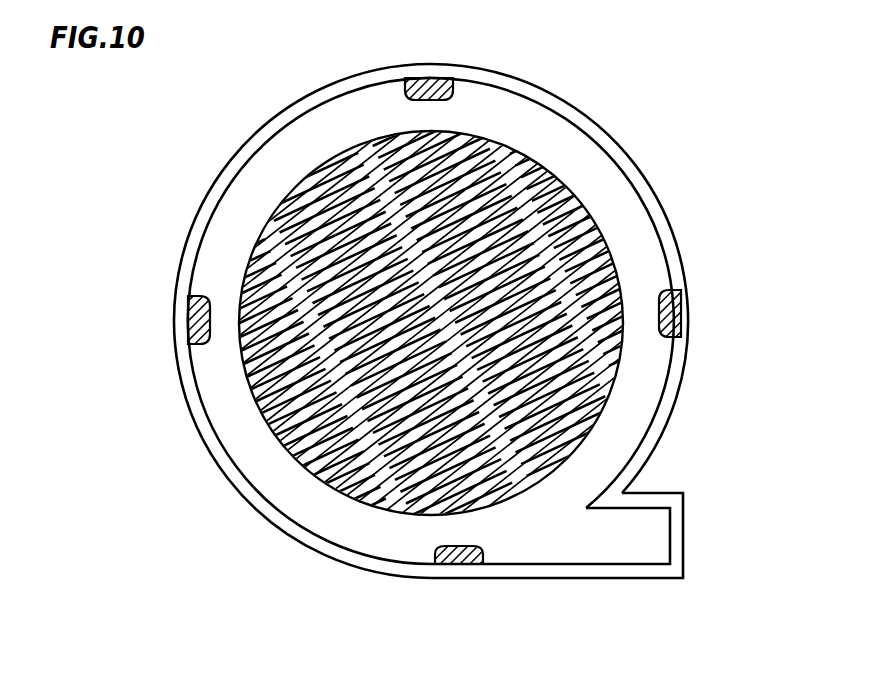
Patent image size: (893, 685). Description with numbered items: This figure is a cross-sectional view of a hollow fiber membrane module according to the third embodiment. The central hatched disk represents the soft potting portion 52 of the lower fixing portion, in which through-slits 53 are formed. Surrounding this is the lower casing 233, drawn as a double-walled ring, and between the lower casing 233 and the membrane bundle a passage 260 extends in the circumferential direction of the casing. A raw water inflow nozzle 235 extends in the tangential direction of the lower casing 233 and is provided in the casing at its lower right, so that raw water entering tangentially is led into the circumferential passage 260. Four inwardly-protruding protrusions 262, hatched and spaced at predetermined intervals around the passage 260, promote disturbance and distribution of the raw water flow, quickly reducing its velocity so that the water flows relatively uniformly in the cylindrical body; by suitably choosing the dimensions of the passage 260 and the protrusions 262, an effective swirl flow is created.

The soft potting portion 52 is at (613, 253).
The through-slits 53 is at (505, 150).
The lower casing 233 is at (630, 150).
The raw water inflow nozzle 235 is at (663, 493).
The passage 260 is at (300, 495).
The protrusions 262 is at (448, 100).